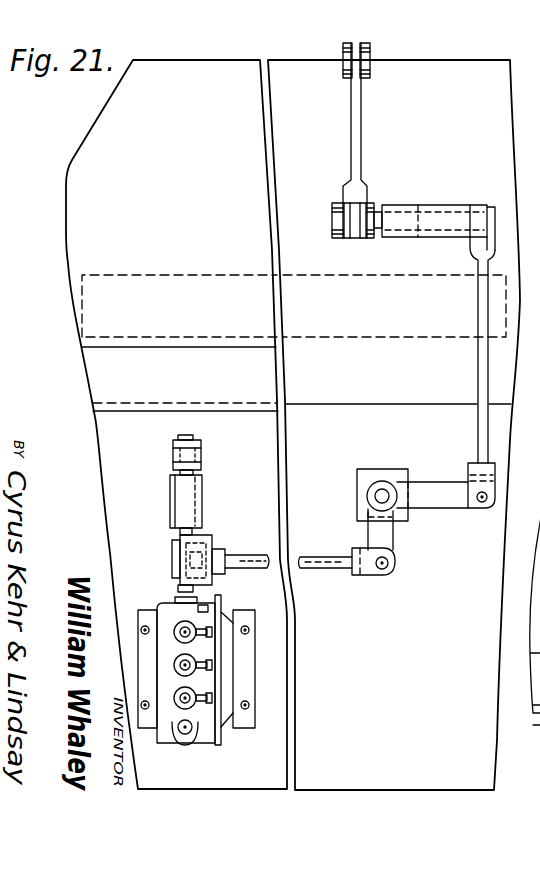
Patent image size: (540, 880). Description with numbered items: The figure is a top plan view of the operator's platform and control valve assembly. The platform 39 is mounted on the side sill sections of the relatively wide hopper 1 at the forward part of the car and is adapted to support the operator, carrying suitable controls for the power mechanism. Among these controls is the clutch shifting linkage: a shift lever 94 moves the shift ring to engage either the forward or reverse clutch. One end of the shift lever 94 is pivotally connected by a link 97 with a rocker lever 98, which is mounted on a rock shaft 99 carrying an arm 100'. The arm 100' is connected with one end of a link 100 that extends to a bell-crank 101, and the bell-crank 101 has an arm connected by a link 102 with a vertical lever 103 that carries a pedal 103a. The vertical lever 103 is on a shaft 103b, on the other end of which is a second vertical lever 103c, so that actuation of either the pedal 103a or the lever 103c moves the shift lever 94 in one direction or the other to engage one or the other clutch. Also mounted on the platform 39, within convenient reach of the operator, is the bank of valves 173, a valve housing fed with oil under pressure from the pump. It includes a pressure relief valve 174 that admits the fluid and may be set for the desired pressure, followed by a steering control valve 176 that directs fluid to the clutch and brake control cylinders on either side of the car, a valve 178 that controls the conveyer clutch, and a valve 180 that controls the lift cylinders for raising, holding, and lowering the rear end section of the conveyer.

The hopper 1 is at (279, 70).
The platform 39 is at (495, 772).
The shift lever 94 is at (372, 50).
The link 97 is at (362, 135).
The rocker lever 98 is at (355, 240).
The rock shaft 99 is at (378, 210).
The arm 100' is at (438, 213).
The link 100 is at (466, 350).
The bell-crank 101 is at (443, 509).
The link 102 is at (311, 555).
The vertical lever 103 is at (158, 562).
The pedal 103a is at (212, 547).
The shaft 103b is at (175, 535).
The vertical lever 103c is at (173, 453).
The bank of valves 173 is at (225, 735).
The pressure relief valve 174 is at (187, 738).
The steering control valve 176 is at (182, 707).
The valve 178 is at (195, 672).
The valve 180 is at (195, 630).